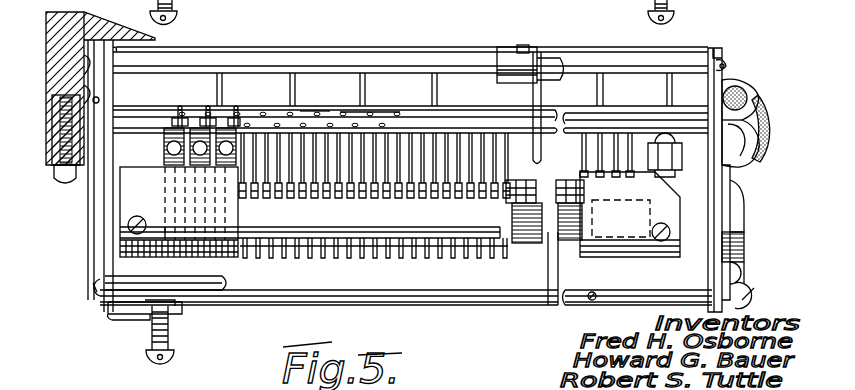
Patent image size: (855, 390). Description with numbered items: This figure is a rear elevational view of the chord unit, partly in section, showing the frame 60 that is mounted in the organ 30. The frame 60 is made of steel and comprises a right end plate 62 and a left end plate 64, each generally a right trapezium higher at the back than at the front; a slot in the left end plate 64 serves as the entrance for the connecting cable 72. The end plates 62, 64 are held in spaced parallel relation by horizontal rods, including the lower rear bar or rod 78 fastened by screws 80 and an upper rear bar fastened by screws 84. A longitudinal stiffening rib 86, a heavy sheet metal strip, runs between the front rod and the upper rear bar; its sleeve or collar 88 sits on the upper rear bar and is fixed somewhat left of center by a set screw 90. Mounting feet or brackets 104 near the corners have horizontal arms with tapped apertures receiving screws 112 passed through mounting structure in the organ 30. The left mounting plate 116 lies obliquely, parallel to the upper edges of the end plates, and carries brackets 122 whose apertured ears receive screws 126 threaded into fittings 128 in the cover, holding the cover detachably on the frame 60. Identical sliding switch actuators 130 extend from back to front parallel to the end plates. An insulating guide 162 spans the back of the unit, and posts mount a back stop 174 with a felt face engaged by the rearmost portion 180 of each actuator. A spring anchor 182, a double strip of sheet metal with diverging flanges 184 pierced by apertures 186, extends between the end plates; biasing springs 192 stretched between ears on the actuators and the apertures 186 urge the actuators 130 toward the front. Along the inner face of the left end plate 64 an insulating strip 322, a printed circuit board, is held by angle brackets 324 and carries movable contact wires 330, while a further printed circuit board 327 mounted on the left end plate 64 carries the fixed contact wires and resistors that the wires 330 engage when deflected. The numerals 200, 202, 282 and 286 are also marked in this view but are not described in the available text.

The organ 30 is at (58, 32).
The frame 60 is at (740, 273).
The right end plate 62 is at (110, 258).
The left end plate 64 is at (746, 198).
The connecting cable 72 is at (752, 100).
The lower rear bar or rod 78 is at (212, 278).
The screws 80 is at (90, 288).
The screws 84 is at (148, 64).
The longitudinal stiffening rib 86 is at (546, 101).
The sleeve or collar 88 is at (525, 48).
The set screw 90 is at (520, 47).
The mounting feet or brackets 104 is at (126, 305).
The screws 112 is at (150, 335).
The left mounting plate 116 is at (716, 50).
The brackets 122 is at (88, 195).
The screws 126 is at (84, 188).
The threaded fittings 128 is at (100, 99).
The sliding switch actuators 130 is at (290, 130).
The insulating guide 162 is at (518, 235).
The back stop 174 is at (130, 205).
The rearmost portion of the actuator 180 is at (390, 226).
The spring anchor 182 is at (459, 99).
The diverging flanges 184 is at (316, 111).
The apertures 186 is at (393, 112).
The biasing springs 192 is at (166, 147).
The member 200 is at (614, 5).
The member 202 is at (497, 5).
The member 282 is at (404, 5).
The member 286 is at (354, 5).
The insulating strip 322 is at (652, 152).
The angle brackets 324 is at (680, 184).
The insulating strip or printed circuit board 327 is at (738, 216).
The movable contact wires 330 is at (745, 240).